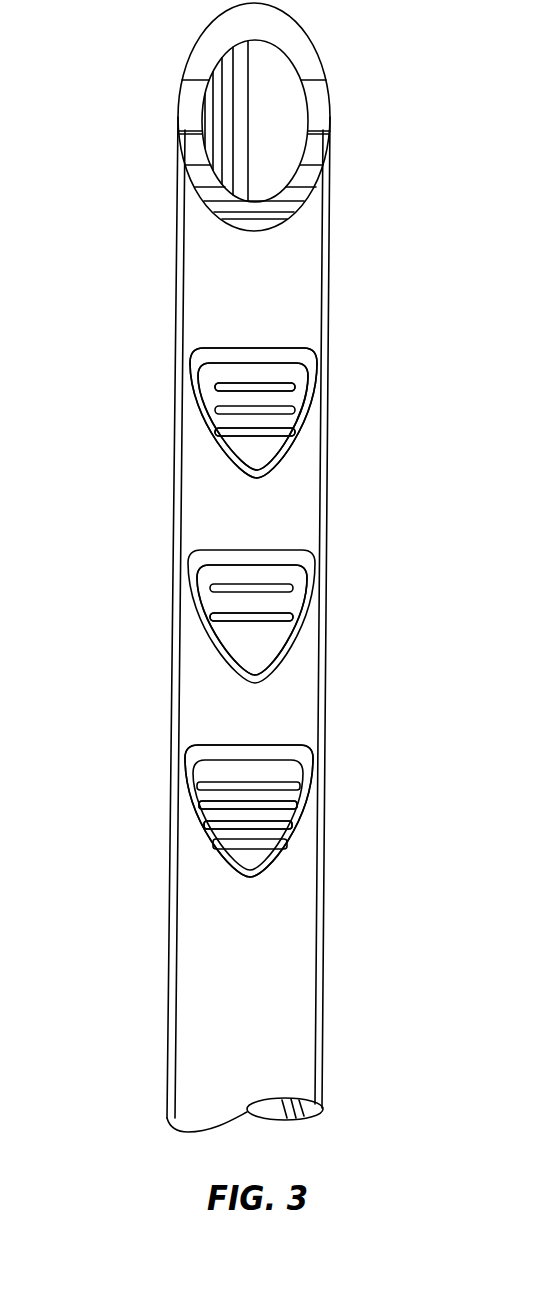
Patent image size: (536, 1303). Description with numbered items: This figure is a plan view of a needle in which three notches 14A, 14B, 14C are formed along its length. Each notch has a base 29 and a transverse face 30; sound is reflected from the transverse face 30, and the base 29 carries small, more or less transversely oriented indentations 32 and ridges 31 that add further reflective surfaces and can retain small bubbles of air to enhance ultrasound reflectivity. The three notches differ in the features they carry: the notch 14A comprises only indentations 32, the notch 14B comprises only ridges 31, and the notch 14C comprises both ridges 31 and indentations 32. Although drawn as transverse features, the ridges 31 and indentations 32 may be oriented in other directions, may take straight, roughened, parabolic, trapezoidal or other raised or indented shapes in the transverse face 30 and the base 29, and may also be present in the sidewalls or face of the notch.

The notch 14A is at (202, 427).
The notch 14B is at (198, 623).
The notch 14C is at (190, 818).
The base 29 is at (273, 370).
The transverse face 30 is at (238, 362).
The ridges 31 is at (282, 617).
The indentations 32 is at (273, 388).